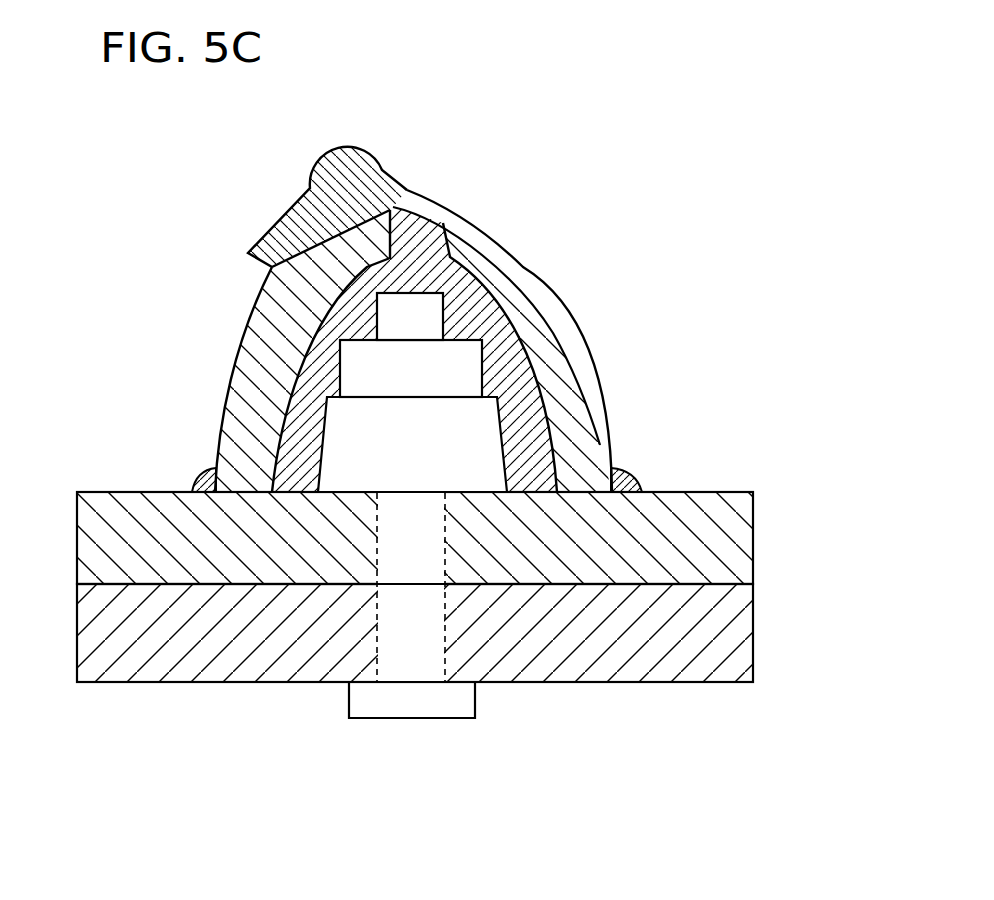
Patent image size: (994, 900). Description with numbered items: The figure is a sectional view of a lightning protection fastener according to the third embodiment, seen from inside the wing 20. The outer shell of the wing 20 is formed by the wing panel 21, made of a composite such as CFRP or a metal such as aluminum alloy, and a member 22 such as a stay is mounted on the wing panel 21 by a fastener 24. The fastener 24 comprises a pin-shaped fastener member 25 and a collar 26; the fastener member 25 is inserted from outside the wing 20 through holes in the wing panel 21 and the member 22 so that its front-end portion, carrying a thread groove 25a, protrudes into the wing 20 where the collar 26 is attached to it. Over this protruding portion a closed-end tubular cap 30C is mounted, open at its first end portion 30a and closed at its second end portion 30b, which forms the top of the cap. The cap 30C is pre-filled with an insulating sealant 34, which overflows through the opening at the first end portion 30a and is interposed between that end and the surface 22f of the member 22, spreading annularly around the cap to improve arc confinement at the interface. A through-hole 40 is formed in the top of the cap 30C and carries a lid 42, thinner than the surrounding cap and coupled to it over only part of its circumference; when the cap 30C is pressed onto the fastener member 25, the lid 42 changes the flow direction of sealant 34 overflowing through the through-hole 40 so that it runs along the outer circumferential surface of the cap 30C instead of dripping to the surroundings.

The wing 20 is at (468, 650).
The wing panel 21 is at (740, 607).
The member 22 is at (740, 520).
The surface of the member 22f is at (122, 492).
The fastener 24 is at (415, 505).
The fastener member 25 is at (349, 712).
The thread groove 25a is at (470, 320).
The collar 26 is at (358, 480).
The cap 30C is at (236, 328).
The first end portion 30a is at (590, 482).
The second end portion 30b is at (470, 213).
The sealant 34 is at (527, 377).
The through-hole 40 is at (430, 217).
The lid 42 is at (433, 192).